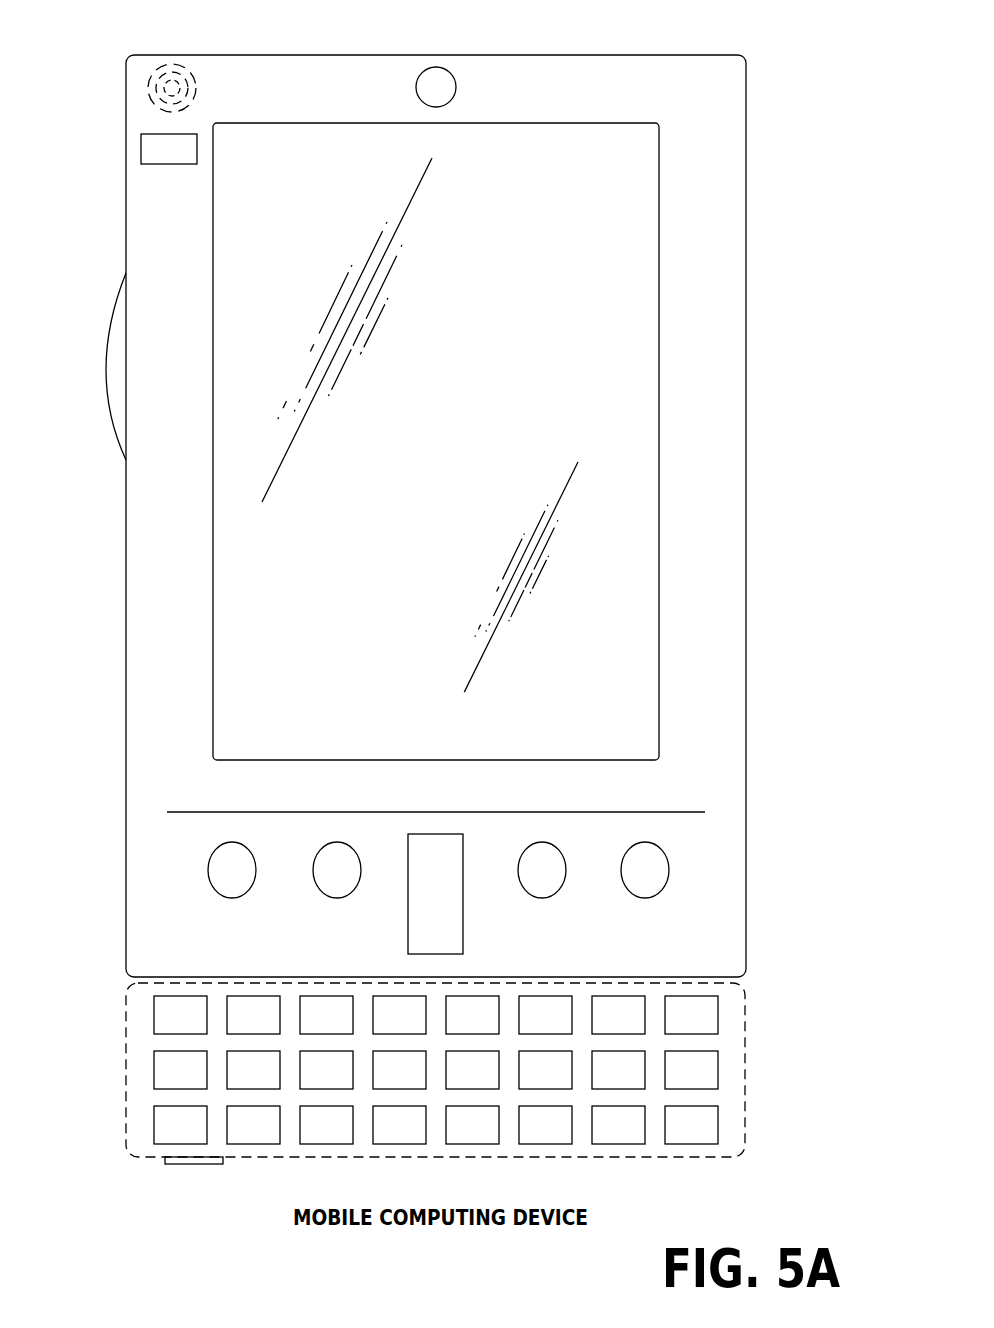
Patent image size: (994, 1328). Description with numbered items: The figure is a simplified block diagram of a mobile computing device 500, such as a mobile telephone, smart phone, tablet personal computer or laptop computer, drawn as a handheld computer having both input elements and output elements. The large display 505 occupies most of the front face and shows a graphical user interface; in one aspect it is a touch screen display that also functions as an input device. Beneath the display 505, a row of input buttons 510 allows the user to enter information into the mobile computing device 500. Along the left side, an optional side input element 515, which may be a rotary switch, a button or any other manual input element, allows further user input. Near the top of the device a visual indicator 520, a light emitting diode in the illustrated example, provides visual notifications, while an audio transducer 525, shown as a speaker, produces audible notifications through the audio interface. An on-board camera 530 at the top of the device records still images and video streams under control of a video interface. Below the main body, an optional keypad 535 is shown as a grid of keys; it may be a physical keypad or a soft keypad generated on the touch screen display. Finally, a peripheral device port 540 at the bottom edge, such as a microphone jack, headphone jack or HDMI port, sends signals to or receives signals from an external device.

The mobile computing device 500 is at (712, 55).
The display 505 is at (257, 605).
The input buttons 510 is at (232, 898).
The side input element 515 is at (106, 368).
The visual indicator 520 is at (141, 150).
The audio transducer 525 is at (140, 90).
The on-board camera 530 is at (437, 66).
The keypad 535 is at (135, 1068).
The peripheral device port 540 is at (172, 1165).